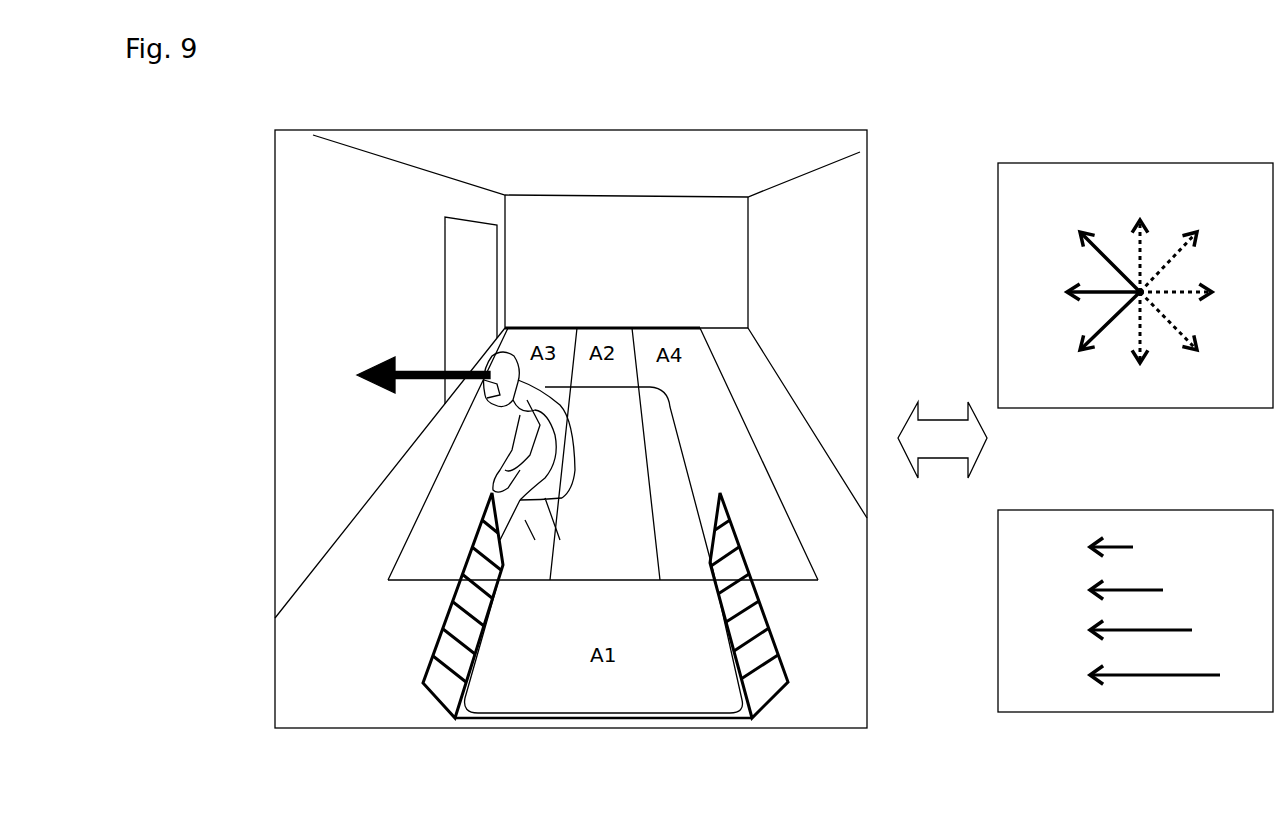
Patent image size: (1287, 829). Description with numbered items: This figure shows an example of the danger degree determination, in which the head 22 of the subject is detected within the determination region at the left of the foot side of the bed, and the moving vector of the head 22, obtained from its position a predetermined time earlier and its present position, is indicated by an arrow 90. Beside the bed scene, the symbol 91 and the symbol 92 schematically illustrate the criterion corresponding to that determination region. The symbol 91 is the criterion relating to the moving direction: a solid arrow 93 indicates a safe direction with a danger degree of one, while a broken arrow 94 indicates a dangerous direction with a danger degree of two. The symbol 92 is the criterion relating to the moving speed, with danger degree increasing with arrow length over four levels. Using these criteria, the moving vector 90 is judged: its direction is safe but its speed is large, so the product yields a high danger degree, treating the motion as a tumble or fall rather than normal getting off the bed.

The head 22 is at (497, 356).
The arrow 90 is at (382, 364).
The symbol 91 is at (1092, 163).
The symbol 92 is at (1090, 510).
The solid arrow 93 is at (1077, 273).
The broken arrow 94 is at (1147, 223).